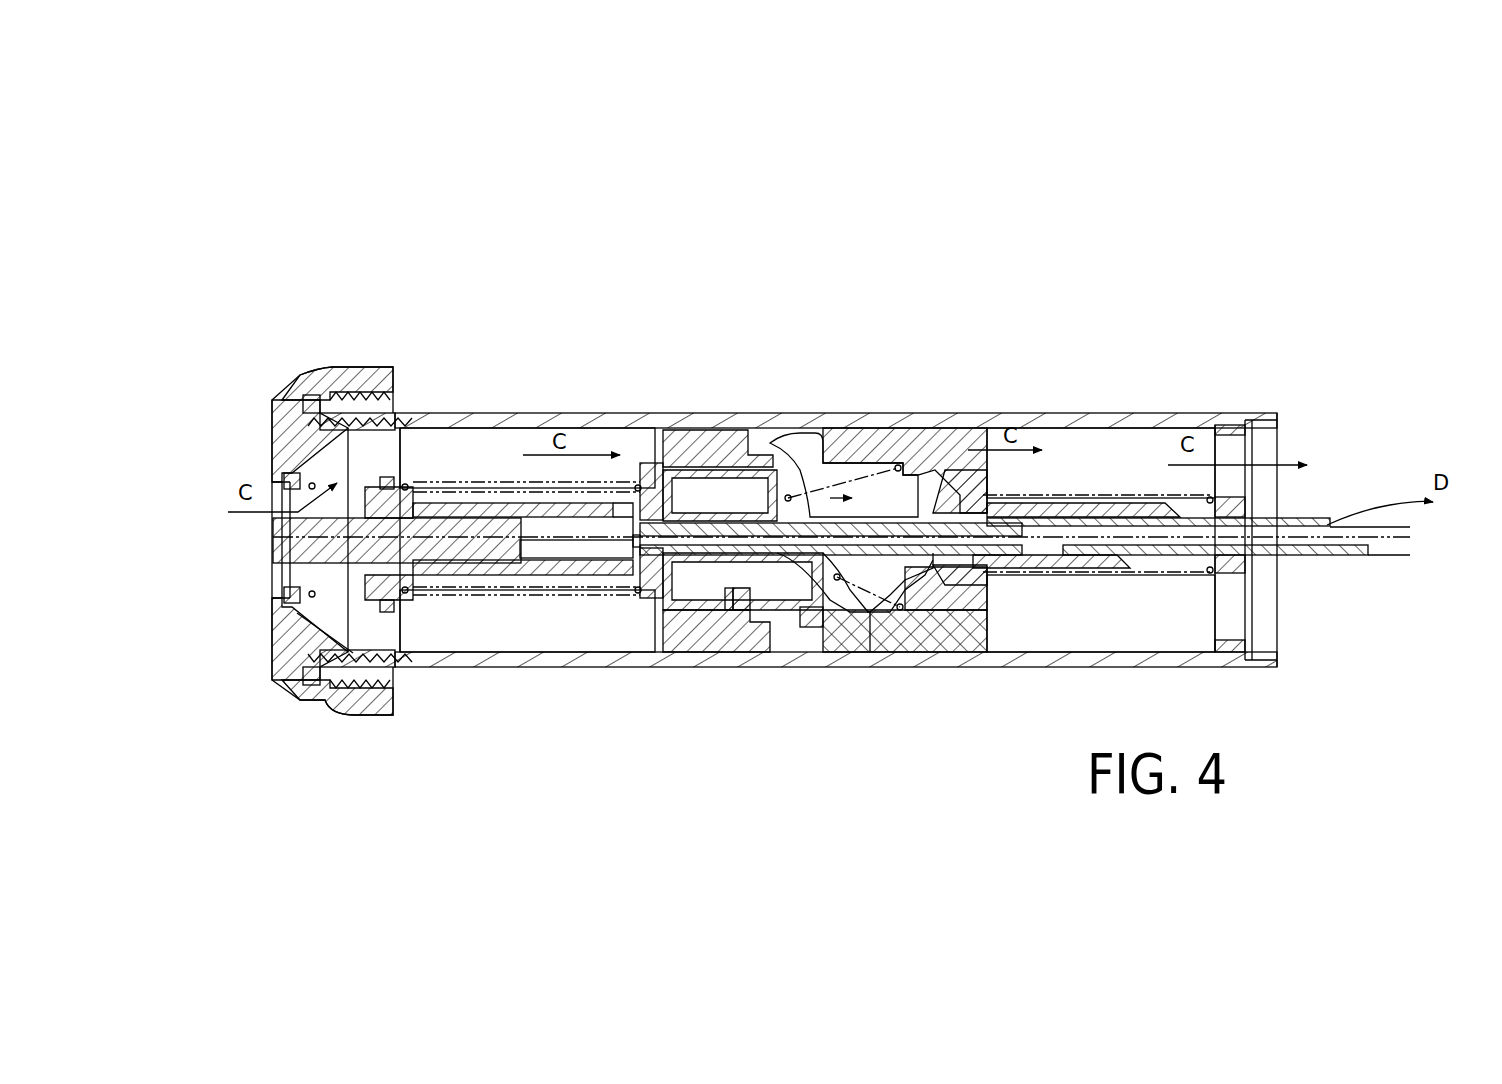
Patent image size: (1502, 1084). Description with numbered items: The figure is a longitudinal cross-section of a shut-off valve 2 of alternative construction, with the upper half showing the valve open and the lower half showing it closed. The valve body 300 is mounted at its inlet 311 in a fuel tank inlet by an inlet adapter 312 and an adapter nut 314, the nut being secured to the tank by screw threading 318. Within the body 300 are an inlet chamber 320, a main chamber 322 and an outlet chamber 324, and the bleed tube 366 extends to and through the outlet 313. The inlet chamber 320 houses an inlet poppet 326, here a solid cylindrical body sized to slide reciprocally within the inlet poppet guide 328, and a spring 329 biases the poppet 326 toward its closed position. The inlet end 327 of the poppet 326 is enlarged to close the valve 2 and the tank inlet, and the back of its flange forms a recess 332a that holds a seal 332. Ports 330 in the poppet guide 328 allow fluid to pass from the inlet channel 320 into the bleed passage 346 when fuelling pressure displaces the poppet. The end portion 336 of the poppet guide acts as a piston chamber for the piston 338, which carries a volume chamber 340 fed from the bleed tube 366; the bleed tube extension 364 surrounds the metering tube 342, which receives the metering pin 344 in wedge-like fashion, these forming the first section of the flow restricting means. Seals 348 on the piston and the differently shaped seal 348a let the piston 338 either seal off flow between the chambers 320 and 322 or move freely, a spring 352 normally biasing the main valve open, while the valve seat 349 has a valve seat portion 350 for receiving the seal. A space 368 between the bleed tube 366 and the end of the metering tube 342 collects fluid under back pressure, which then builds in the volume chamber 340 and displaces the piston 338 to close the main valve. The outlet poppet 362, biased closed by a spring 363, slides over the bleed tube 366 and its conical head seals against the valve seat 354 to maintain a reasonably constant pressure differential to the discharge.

The shut-off valve 2 is at (810, 305).
The valve body 300 is at (528, 412).
The inlet 311 is at (232, 545).
The inlet adapter 312 is at (272, 430).
The outlet 313 is at (1412, 545).
The adapter nut 314 is at (355, 365).
The screw threading 318 is at (393, 396).
The inlet chamber 320 is at (484, 468).
The main chamber 322 is at (880, 428).
The outlet chamber 324 is at (1115, 468).
The inlet poppet 326 is at (272, 574).
The inlet end 327 is at (355, 572).
The inlet poppet guide 328 is at (520, 655).
The spring 329 is at (565, 600).
The ports 330 is at (645, 462).
The seal 332 is at (292, 632).
The recess 332a is at (286, 610).
The end portion of inlet poppet valve guide 336 is at (648, 655).
The piston 338 is at (800, 655).
The volume chamber 340 is at (755, 514).
The metering tube 342 is at (788, 655).
The metering pin 344 is at (630, 655).
The bleed passage 346 is at (1338, 570).
The seals 348 is at (772, 428).
The seal 348a is at (722, 655).
The valve seat 349 is at (942, 655).
The valve seat portion 350 is at (872, 625).
The spring 352 is at (830, 428).
The valve seat 354 is at (1005, 652).
The outlet poppet 362 is at (978, 428).
The spring 363 is at (1140, 497).
The bleed tube extension 364 is at (1052, 428).
The bleed tube 366 is at (1312, 512).
The space 368 is at (1095, 652).